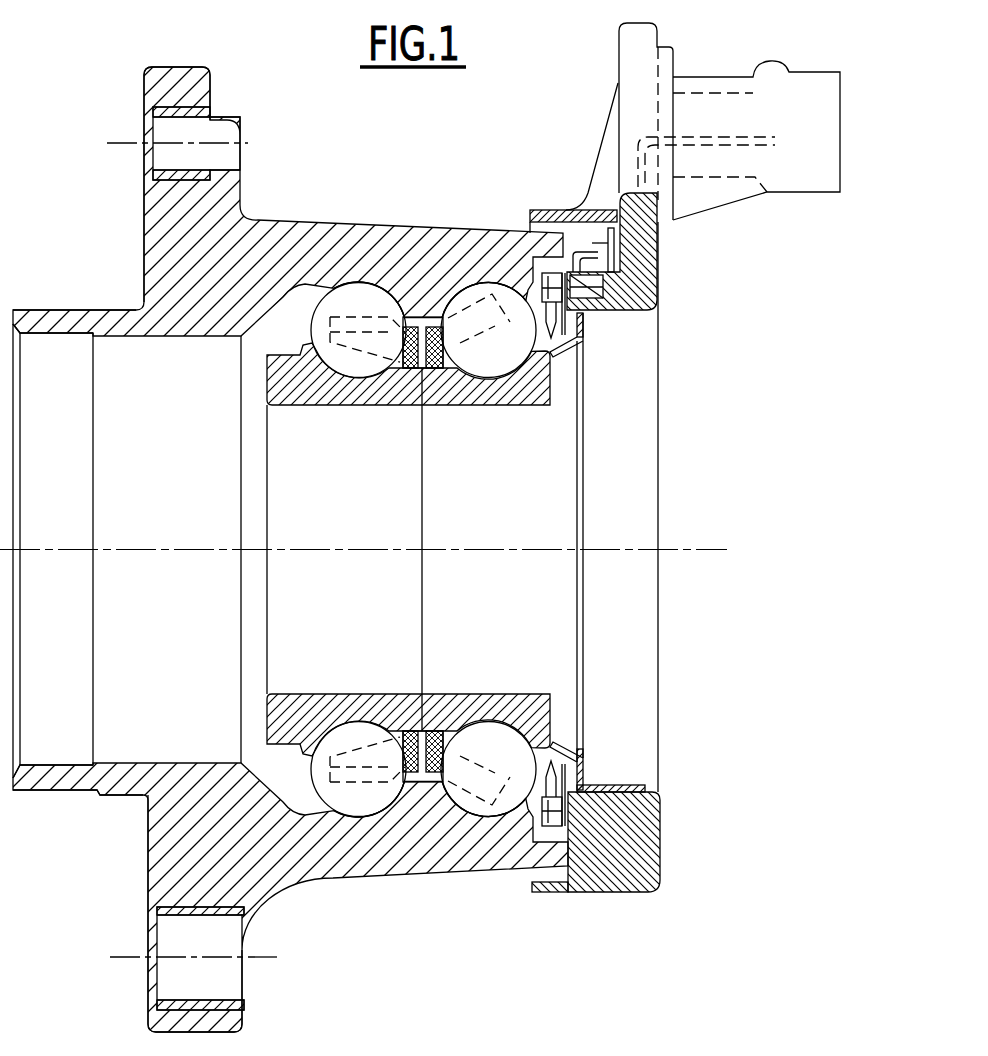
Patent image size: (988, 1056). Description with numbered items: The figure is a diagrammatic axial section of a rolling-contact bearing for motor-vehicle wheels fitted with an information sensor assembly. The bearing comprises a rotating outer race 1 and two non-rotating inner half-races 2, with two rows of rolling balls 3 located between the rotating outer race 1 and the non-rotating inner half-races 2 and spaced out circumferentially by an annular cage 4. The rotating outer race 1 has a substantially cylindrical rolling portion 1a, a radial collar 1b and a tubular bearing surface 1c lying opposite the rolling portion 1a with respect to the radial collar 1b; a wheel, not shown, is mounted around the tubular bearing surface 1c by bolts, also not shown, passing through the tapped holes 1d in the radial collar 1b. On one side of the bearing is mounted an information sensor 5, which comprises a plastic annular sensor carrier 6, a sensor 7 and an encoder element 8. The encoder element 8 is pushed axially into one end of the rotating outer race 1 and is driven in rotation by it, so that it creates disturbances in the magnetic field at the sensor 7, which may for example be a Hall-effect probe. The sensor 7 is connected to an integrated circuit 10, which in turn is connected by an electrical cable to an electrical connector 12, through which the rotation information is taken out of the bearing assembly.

The rotating outer race 1 is at (278, 214).
The rolling portion 1a is at (340, 243).
The radial collar 1b is at (163, 83).
The tubular bearing surface 1c is at (57, 320).
The tapped holes 1d is at (163, 128).
The non-rotating inner half-races 2 is at (355, 395).
The rolling balls 3 is at (362, 300).
The annular cage 4 is at (430, 333).
The information sensor 5 is at (662, 433).
The sensor carrier 6 is at (637, 498).
The sensor 7 is at (647, 298).
The encoder element 8 is at (533, 280).
The integrated circuit 10 is at (620, 262).
The electrical connector 12 is at (722, 137).